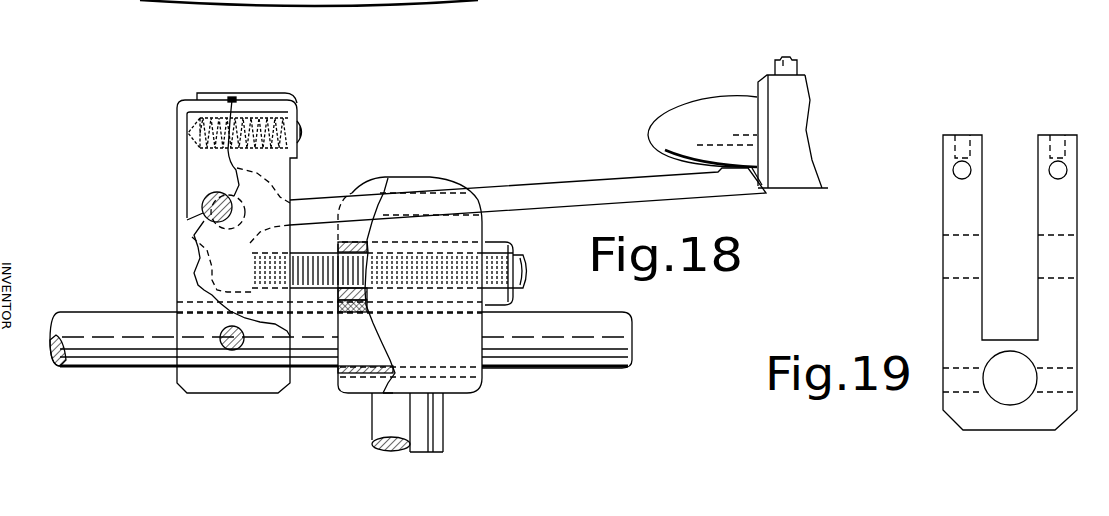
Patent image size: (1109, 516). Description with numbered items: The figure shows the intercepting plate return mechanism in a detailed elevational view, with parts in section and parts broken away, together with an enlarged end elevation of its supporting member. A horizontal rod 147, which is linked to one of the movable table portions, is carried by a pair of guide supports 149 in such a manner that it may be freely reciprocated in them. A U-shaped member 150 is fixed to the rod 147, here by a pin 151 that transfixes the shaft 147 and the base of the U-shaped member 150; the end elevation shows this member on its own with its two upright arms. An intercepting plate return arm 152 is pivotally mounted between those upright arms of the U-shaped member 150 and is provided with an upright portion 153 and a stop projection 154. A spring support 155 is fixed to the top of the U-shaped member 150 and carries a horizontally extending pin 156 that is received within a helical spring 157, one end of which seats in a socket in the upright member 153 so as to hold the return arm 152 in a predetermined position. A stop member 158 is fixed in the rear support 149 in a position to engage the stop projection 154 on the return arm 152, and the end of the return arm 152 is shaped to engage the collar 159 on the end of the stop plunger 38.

In FIG. 18, the stop plunger 38 is at (700, 115).
In FIG. 18, the rod 147 is at (82, 342).
In FIG. 18, the guide support 149 is at (455, 340).
In FIG. 18, the U-shaped member 150 is at (235, 377).
In FIG. 19, the U-shaped member 150 is at (1010, 303).
In FIG. 18, the pin 151 is at (222, 346).
In FIG. 18, the intercepting plate return arm 152 is at (515, 197).
In FIG. 18, the upright portion 153 is at (195, 163).
In FIG. 18, the stop projection 154 is at (218, 263).
In FIG. 18, the spring support 155 is at (287, 97).
In FIG. 18, the pin 156 is at (303, 128).
In FIG. 18, the helical spring 157 is at (232, 105).
In FIG. 18, the stop member 158 is at (316, 272).
In FIG. 18, the collar 159 is at (775, 88).